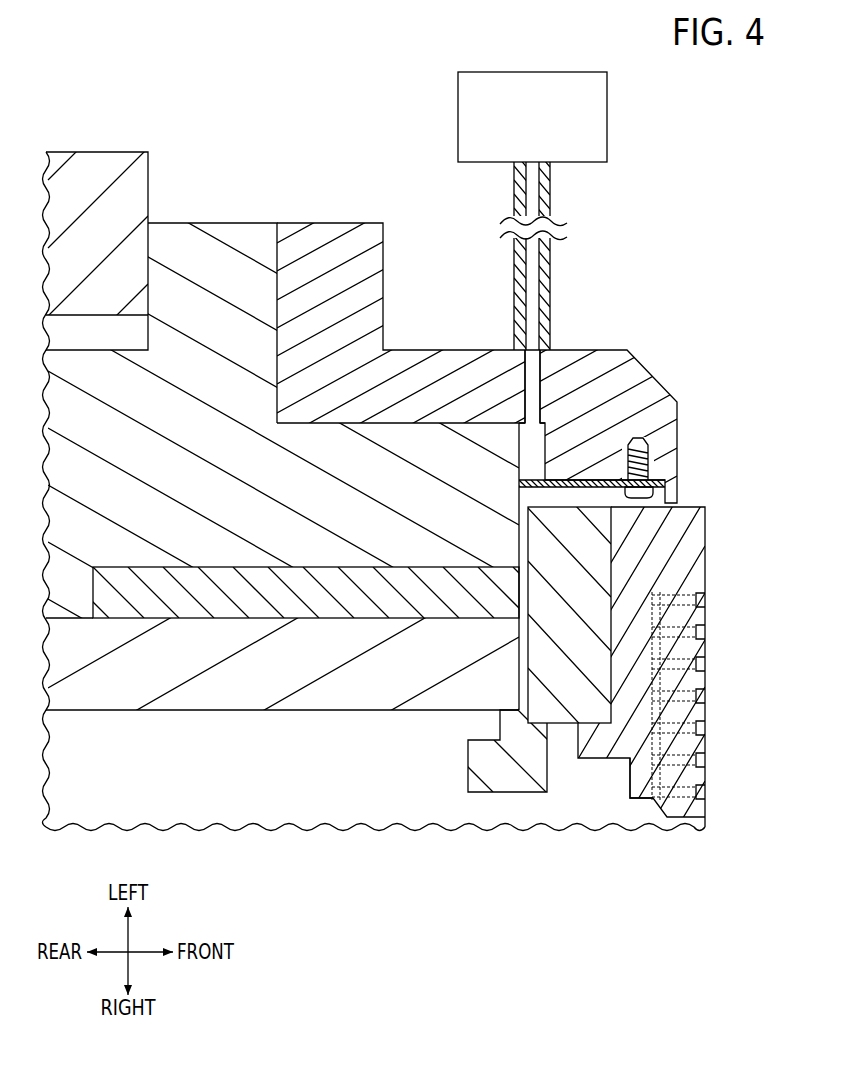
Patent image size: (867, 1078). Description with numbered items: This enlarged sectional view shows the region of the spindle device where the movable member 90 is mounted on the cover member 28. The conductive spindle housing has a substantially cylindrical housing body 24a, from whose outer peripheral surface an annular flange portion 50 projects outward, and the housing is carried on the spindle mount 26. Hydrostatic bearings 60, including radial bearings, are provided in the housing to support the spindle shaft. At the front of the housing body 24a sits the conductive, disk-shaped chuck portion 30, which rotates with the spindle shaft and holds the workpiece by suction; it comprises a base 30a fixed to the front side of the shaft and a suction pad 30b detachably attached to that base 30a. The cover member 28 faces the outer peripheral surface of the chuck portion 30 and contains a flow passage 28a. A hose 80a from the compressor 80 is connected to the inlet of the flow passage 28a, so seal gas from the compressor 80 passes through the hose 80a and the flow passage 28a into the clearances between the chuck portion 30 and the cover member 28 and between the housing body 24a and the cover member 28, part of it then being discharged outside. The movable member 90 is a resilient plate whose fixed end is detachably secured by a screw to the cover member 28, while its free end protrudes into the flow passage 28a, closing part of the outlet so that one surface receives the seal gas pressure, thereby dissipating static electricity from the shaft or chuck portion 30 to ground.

The housing body 24a is at (402, 480).
The spindle mount 26 is at (95, 170).
The cover member 28 is at (464, 362).
The flow passage 28a is at (530, 385).
The chuck portion 30 is at (724, 586).
The base 30a is at (500, 782).
The suction pad 30b is at (643, 792).
The flange portion 50 is at (227, 240).
The bearings 60 is at (360, 605).
The compressor 80 is at (590, 120).
The hose 80a is at (542, 210).
The movable member 90 is at (614, 488).